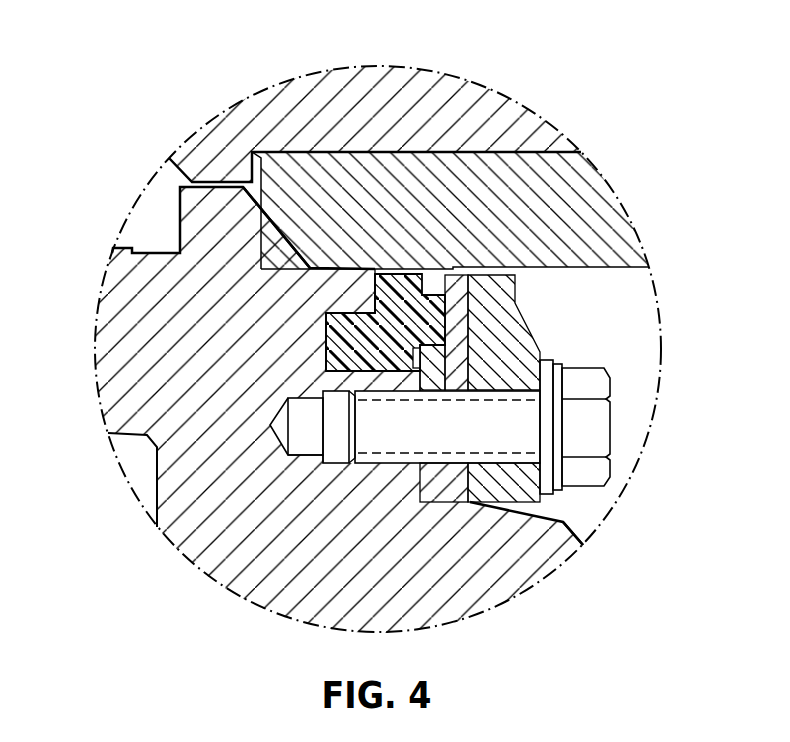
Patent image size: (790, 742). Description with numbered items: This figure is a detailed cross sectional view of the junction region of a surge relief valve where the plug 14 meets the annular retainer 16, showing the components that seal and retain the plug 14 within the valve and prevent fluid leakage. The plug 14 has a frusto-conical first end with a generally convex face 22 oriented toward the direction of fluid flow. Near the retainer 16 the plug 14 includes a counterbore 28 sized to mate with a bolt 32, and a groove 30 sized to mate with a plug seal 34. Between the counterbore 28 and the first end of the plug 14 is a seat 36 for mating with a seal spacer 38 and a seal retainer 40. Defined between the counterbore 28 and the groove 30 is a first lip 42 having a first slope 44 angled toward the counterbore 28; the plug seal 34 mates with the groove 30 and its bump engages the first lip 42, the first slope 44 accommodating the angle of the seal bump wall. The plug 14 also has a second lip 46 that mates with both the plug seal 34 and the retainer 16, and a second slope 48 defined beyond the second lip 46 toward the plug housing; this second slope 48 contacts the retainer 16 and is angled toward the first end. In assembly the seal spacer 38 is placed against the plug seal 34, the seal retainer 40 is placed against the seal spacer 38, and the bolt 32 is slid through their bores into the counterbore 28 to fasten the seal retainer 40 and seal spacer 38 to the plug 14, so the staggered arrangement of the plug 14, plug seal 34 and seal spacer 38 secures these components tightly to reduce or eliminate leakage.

The plug 14 is at (100, 317).
The retainer 16 is at (353, 167).
The convex face 22 is at (580, 517).
The counterbore 28 is at (302, 462).
The groove 30 is at (324, 349).
The bolt 32 is at (614, 418).
The plug seal 34 is at (385, 320).
The seat 36 is at (440, 502).
The seal spacer 38 is at (516, 371).
The seal retainer 40 is at (498, 337).
The first lip 42 is at (380, 383).
The first slope 44 is at (418, 378).
The second lip 46 is at (362, 295).
The second slope 48 is at (277, 233).